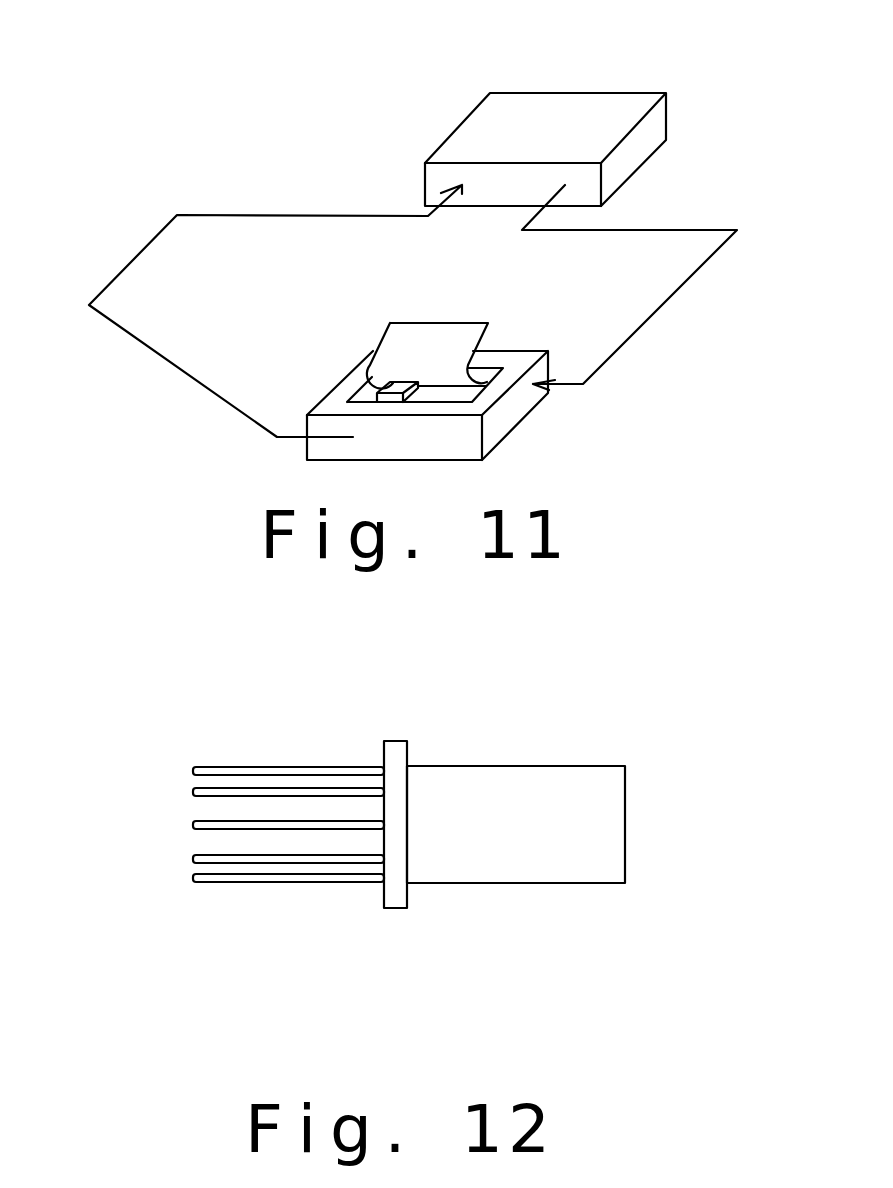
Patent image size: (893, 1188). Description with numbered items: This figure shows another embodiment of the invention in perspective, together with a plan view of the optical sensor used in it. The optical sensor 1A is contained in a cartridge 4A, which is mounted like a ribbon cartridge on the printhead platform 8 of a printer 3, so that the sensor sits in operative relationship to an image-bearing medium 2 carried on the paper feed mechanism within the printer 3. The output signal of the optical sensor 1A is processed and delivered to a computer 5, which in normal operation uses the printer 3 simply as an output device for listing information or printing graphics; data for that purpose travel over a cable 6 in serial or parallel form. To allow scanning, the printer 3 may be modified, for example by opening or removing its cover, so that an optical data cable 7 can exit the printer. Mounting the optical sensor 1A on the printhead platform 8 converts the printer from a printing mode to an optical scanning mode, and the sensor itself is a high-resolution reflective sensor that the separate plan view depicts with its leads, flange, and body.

In FIG. 11, the optical sensor 1A is at (418, 386).
In FIG. 12, the optical sensor 1A is at (467, 883).
In FIG. 11, the image-bearing medium 2 is at (392, 323).
In FIG. 11, the printer 3 is at (518, 422).
In FIG. 11, the cartridge 4A is at (377, 393).
In FIG. 11, the computer 5 is at (448, 137).
In FIG. 11, the cable 6 is at (660, 308).
In FIG. 11, the optical data cable 7 is at (147, 343).
In FIG. 11, the printhead platform 8 is at (422, 387).